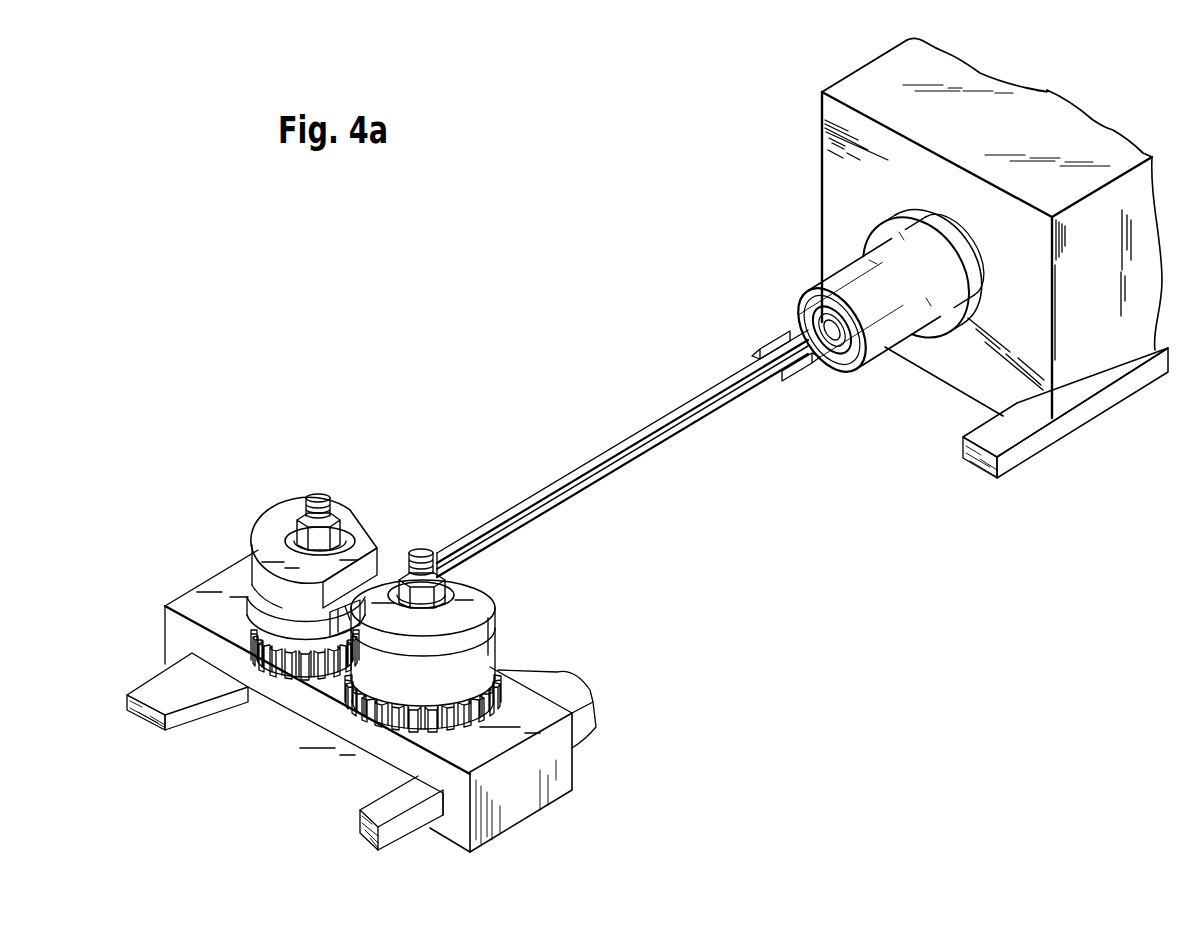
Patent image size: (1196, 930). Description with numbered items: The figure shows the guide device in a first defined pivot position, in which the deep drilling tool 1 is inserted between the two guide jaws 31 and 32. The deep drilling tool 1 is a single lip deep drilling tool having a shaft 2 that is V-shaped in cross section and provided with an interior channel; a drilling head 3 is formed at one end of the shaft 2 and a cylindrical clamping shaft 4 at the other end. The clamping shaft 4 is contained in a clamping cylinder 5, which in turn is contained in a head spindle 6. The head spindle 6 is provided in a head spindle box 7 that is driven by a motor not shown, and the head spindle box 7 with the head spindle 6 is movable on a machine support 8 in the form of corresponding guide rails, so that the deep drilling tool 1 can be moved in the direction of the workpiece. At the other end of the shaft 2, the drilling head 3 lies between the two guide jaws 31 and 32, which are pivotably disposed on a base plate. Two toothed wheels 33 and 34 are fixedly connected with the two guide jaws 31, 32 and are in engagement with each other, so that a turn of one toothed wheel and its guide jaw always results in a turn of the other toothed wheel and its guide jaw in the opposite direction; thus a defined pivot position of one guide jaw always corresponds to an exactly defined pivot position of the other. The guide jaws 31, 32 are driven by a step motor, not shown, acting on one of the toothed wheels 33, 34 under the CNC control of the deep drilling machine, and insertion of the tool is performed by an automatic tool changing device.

The deep drilling tool 1 is at (533, 495).
The shaft 2 is at (612, 455).
The drilling head 3 is at (340, 610).
The clamping shaft 4 is at (818, 320).
The clamping cylinder 5 is at (845, 273).
The head spindle 6 is at (905, 228).
The head spindle box 7 is at (860, 85).
The machine support 8 is at (1020, 453).
The guide jaw 31 is at (490, 588).
The guide jaw 32 is at (266, 512).
The toothed wheel 33 is at (372, 712).
The toothed wheel 34 is at (283, 668).